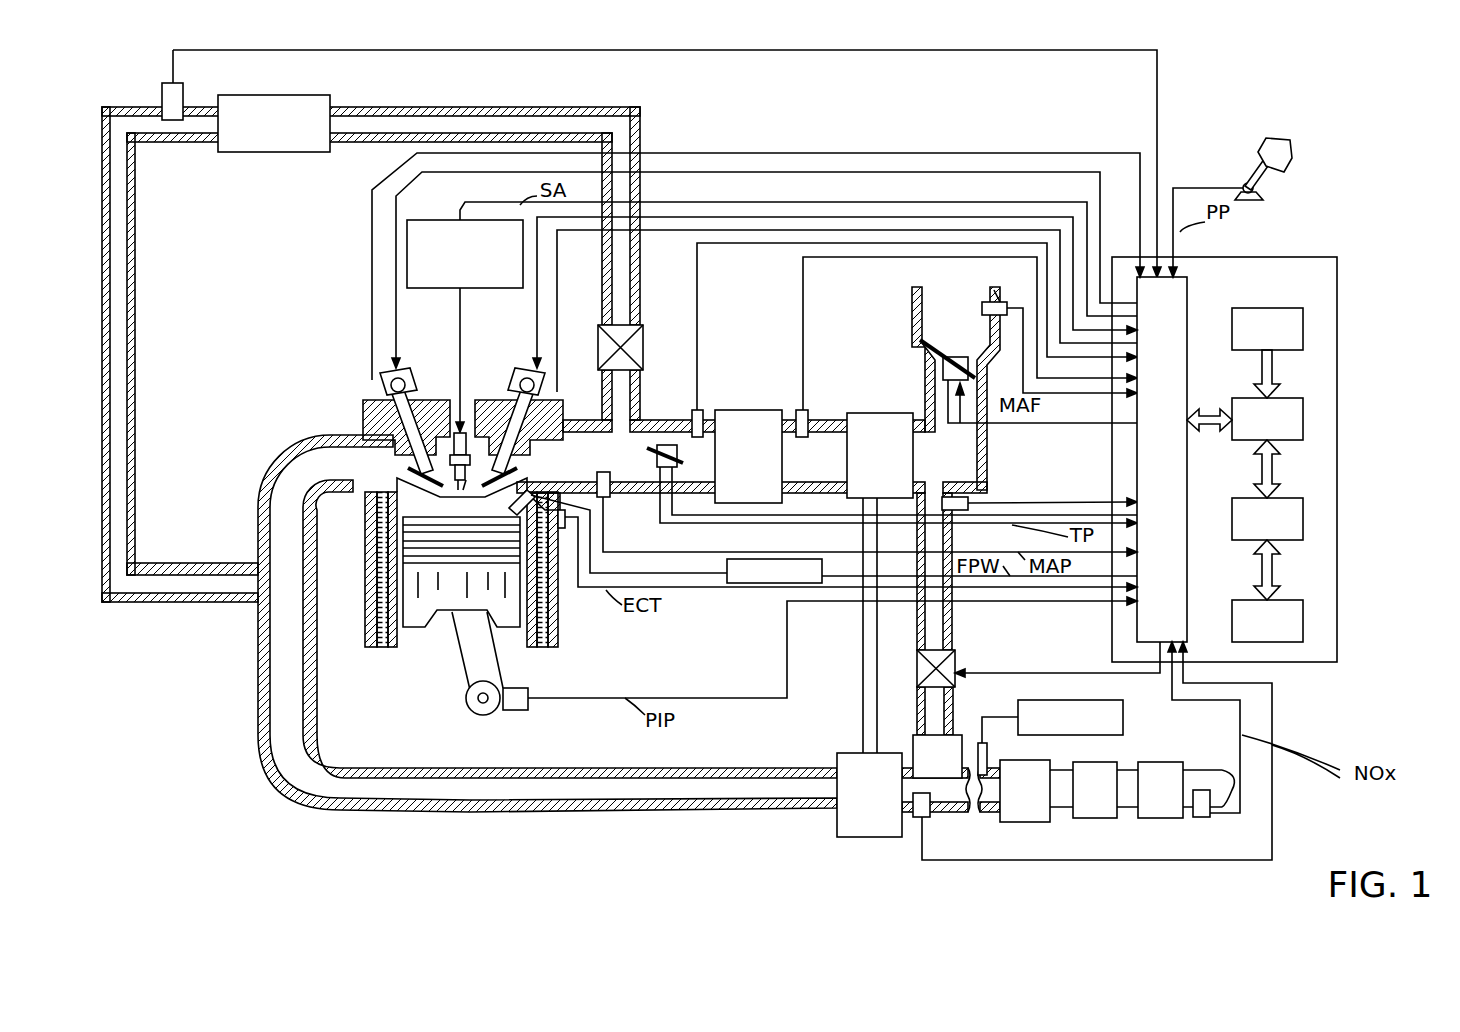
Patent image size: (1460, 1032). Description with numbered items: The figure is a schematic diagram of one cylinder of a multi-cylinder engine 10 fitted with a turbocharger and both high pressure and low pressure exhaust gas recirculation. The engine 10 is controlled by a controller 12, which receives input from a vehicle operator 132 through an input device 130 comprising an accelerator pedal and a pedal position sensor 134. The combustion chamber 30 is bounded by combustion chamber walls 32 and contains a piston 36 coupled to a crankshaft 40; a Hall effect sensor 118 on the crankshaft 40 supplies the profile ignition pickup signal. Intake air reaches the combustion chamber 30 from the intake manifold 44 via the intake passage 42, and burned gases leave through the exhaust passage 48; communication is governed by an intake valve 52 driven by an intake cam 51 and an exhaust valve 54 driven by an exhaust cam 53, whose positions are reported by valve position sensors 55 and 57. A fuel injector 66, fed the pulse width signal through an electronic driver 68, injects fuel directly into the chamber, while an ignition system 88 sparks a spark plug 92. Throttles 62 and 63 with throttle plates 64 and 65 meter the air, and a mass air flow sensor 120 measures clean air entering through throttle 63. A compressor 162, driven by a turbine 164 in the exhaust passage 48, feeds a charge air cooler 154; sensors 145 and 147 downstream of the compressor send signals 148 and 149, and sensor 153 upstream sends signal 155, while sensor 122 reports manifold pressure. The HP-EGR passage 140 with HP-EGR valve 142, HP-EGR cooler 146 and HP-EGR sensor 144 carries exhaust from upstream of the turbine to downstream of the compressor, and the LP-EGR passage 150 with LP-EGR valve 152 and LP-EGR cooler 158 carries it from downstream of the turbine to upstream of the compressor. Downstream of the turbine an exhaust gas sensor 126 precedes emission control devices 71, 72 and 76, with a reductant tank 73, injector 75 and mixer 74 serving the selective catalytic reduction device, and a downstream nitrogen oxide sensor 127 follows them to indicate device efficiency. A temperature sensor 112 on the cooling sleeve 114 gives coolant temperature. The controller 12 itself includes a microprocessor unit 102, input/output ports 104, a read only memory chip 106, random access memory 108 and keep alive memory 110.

The engine 10 is at (298, 352).
The controller 12 is at (1325, 258).
The combustion chamber 30 is at (435, 502).
The combustion chamber walls 32 is at (405, 632).
The piston 36 is at (445, 598).
The crankshaft 40 is at (468, 712).
The intake passage 42 is at (941, 335).
The intake manifold 44 is at (598, 455).
The exhaust passage 48 is at (318, 475).
The intake cam 51 is at (528, 362).
The intake valve 52 is at (505, 482).
The exhaust cam 53 is at (398, 362).
The exhaust valve 54 is at (410, 475).
The valve position sensor 55 is at (540, 380).
The valve position sensor 57 is at (383, 388).
The throttle 62 is at (659, 447).
The throttle 63 is at (920, 340).
The throttle plate 64 is at (660, 458).
The throttle plate 65 is at (943, 366).
The fuel injector 66 is at (512, 505).
The electronic driver 68 is at (822, 572).
The emission control device 71 is at (1013, 802).
The emission control device 72 is at (1083, 802).
The reductant tank 73 is at (1058, 729).
The mixer 74 is at (997, 812).
The injector 75 is at (988, 757).
The emission control device 76 is at (1148, 802).
The ignition system 88 is at (425, 220).
The spark plug 92 is at (463, 430).
The microprocessor unit 102 is at (1303, 422).
The input/output ports 104 is at (1190, 283).
The read only memory chip 106 is at (1303, 325).
The random access memory 108 is at (1303, 520).
The keep alive memory 110 is at (1303, 622).
The temperature sensor 112 is at (565, 530).
The cooling sleeve 114 is at (553, 630).
The Hall effect sensor 118 is at (522, 712).
The mass air flow sensor 120 is at (990, 300).
The manifold pressure sensor 122 is at (600, 480).
The exhaust gas sensor 126 is at (930, 815).
The NOx sensor 127 is at (1202, 818).
The input device 130 is at (1240, 170).
The vehicle operator 132 is at (1292, 152).
The pedal position sensor 134 is at (1262, 190).
The HP-EGR passage 140 is at (537, 107).
The HP-EGR valve 142 is at (643, 342).
The HP-EGR sensor 144 is at (165, 88).
The sensor 145 is at (808, 415).
The HP-EGR cooler 146 is at (256, 135).
The sensor 147 is at (703, 415).
The signal 148 is at (803, 328).
The signal 149 is at (697, 328).
The LP-EGR passage 150 is at (957, 613).
The LP-EGR valve 152 is at (917, 676).
The sensor 153 is at (953, 497).
The charge air cooler 154 is at (730, 467).
The signal 155 is at (1012, 502).
The LP-EGR cooler 158 is at (919, 768).
The compressor 162 is at (862, 467).
The turbine 164 is at (852, 803).